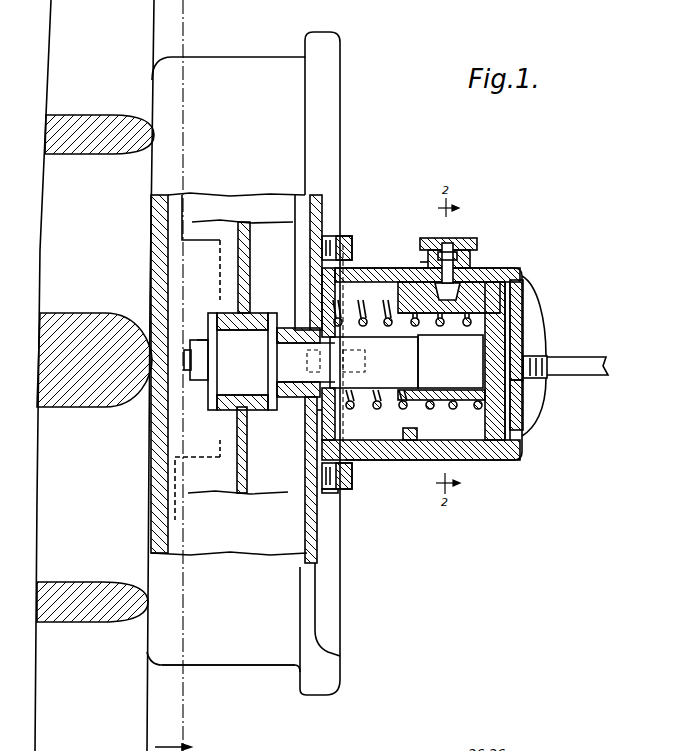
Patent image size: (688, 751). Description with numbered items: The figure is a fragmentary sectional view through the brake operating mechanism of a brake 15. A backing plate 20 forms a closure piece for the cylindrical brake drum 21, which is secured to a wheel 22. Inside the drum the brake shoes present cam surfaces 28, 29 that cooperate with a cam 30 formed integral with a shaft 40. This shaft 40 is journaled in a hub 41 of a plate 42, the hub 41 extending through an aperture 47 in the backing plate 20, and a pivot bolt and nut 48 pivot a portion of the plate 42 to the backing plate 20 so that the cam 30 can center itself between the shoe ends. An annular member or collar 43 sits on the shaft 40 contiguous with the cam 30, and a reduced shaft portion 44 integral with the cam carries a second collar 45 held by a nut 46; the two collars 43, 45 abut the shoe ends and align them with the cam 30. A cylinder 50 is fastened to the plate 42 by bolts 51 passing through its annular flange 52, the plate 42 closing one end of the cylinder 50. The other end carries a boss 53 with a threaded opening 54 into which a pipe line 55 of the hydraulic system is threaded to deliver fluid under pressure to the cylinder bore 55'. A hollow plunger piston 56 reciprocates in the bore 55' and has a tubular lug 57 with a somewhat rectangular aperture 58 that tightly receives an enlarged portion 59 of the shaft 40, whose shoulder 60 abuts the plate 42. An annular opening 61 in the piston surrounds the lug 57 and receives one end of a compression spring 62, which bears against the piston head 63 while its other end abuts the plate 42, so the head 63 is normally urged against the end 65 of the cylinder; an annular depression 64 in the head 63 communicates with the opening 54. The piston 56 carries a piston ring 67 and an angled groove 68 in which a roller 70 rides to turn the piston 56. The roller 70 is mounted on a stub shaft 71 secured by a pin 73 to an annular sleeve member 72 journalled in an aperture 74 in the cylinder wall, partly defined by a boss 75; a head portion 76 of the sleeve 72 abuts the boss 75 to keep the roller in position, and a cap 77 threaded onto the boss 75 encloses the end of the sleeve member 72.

The wheel 22 is at (157, 28).
The brake 15 is at (231, 53).
The backing plate 20 is at (323, 222).
The cylindrical brake drum 21 is at (241, 666).
The cam surface 28 is at (236, 311).
The cam surface 29 is at (224, 413).
The cam 30 is at (238, 372).
The shaft 40 is at (277, 360).
The hub 41 is at (273, 402).
The plate 42 is at (320, 420).
The annular member or collar 43 is at (270, 384).
The reduced shaft portion 44 is at (192, 370).
The annular member or collar 45 is at (235, 402).
The nut 46 is at (197, 340).
The aperture 47 is at (306, 326).
The pivot bolt and nut 48 is at (352, 370).
The cylinder 50 is at (420, 461).
The bolts 51 is at (350, 478).
The annular flange 52 is at (338, 492).
The boss 53 is at (540, 355).
The threaded opening 54 is at (553, 367).
The pipe line 55 is at (582, 357).
The cylinder bore 55' is at (351, 252).
The plunger piston 56 is at (512, 452).
The tubular lug 57 is at (397, 397).
The rectangular aperture 58 is at (515, 342).
The enlarged portion 59 is at (376, 332).
The shoulder 60 is at (338, 330).
The annular opening 61 is at (506, 280).
The compression spring 62 is at (468, 346).
The head 63 is at (527, 302).
The annular depression 64 is at (526, 397).
The end of the cylinder 65 is at (524, 352).
The piston ring 67 is at (404, 300).
The groove 68 is at (463, 290).
The roller 70 is at (471, 302).
The stub shaft 71 is at (458, 248).
The annular sleeve member 72 is at (425, 268).
The pin 73 is at (446, 243).
The aperture 74 is at (425, 274).
The boss 75 is at (472, 246).
The head portion 76 is at (425, 255).
The cap 77 is at (451, 243).